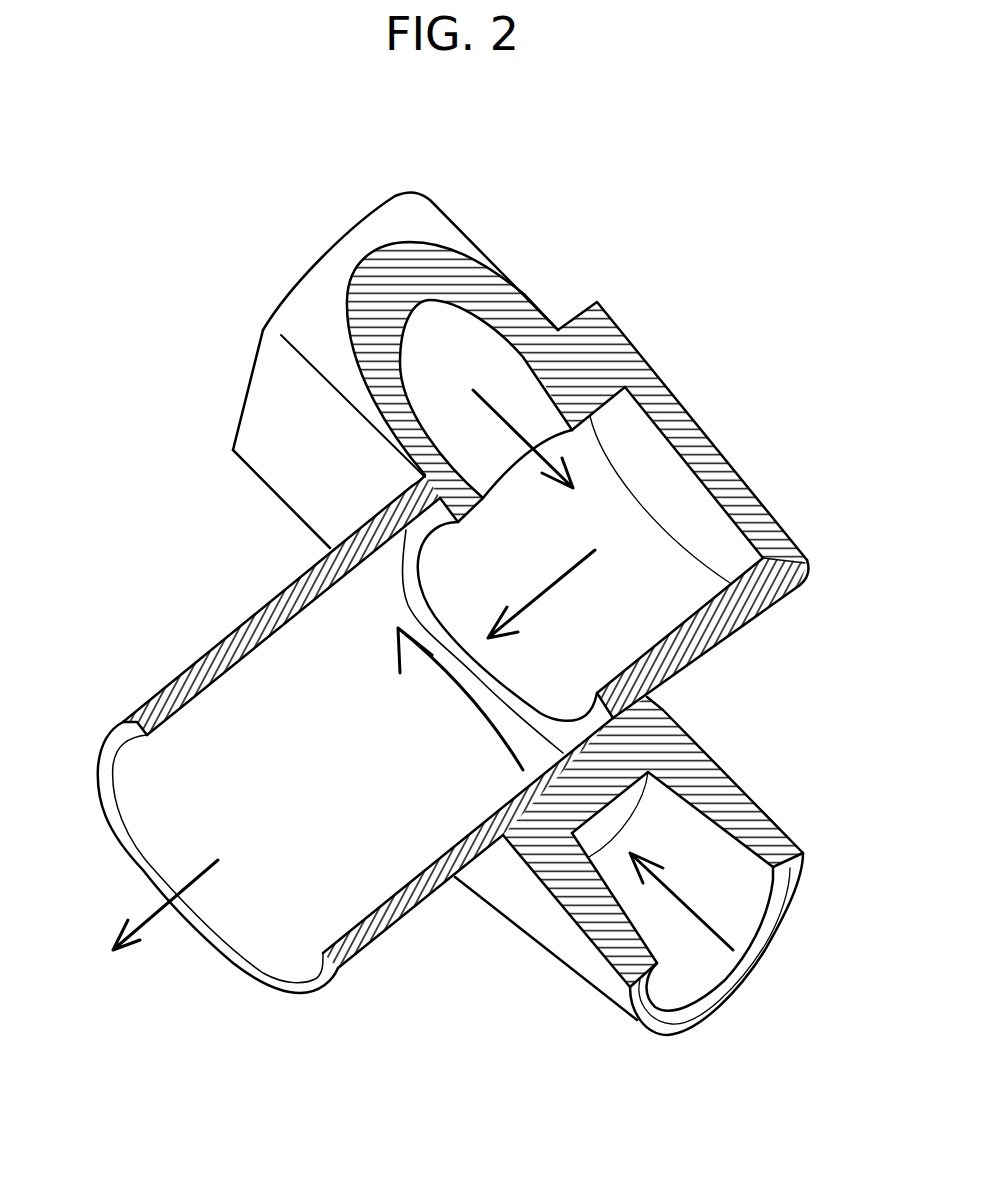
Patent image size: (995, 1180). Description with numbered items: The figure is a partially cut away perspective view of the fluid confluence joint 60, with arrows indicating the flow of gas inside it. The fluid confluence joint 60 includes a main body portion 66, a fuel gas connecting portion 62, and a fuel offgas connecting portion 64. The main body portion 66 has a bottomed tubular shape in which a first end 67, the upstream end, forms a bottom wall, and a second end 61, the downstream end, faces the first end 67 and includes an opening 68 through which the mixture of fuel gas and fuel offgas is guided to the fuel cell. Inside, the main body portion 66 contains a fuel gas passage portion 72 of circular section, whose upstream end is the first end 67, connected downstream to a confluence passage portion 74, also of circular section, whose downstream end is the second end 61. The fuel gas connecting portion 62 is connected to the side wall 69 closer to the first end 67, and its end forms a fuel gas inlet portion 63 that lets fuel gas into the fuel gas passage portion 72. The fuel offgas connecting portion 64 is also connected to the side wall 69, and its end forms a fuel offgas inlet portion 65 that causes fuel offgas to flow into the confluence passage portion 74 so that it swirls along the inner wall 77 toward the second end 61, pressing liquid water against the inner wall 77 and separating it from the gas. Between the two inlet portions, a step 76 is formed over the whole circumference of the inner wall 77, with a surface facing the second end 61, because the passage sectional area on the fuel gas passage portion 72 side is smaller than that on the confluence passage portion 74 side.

The fluid confluence joint 60 is at (122, 302).
The second end 61 is at (262, 990).
The fuel gas connecting portion 62 is at (463, 228).
The fuel gas inlet portion 63 is at (543, 438).
The fuel offgas connecting portion 64 is at (580, 961).
The fuel offgas inlet portion 65 is at (607, 817).
The main body portion 66 is at (738, 630).
The first end 67 is at (705, 425).
The opening 68 is at (233, 927).
The side wall 69 is at (262, 603).
The fuel gas passage portion 72 is at (603, 638).
The confluence passage portion 74 is at (347, 775).
The step 76 is at (330, 567).
The inner wall 77 is at (228, 723).